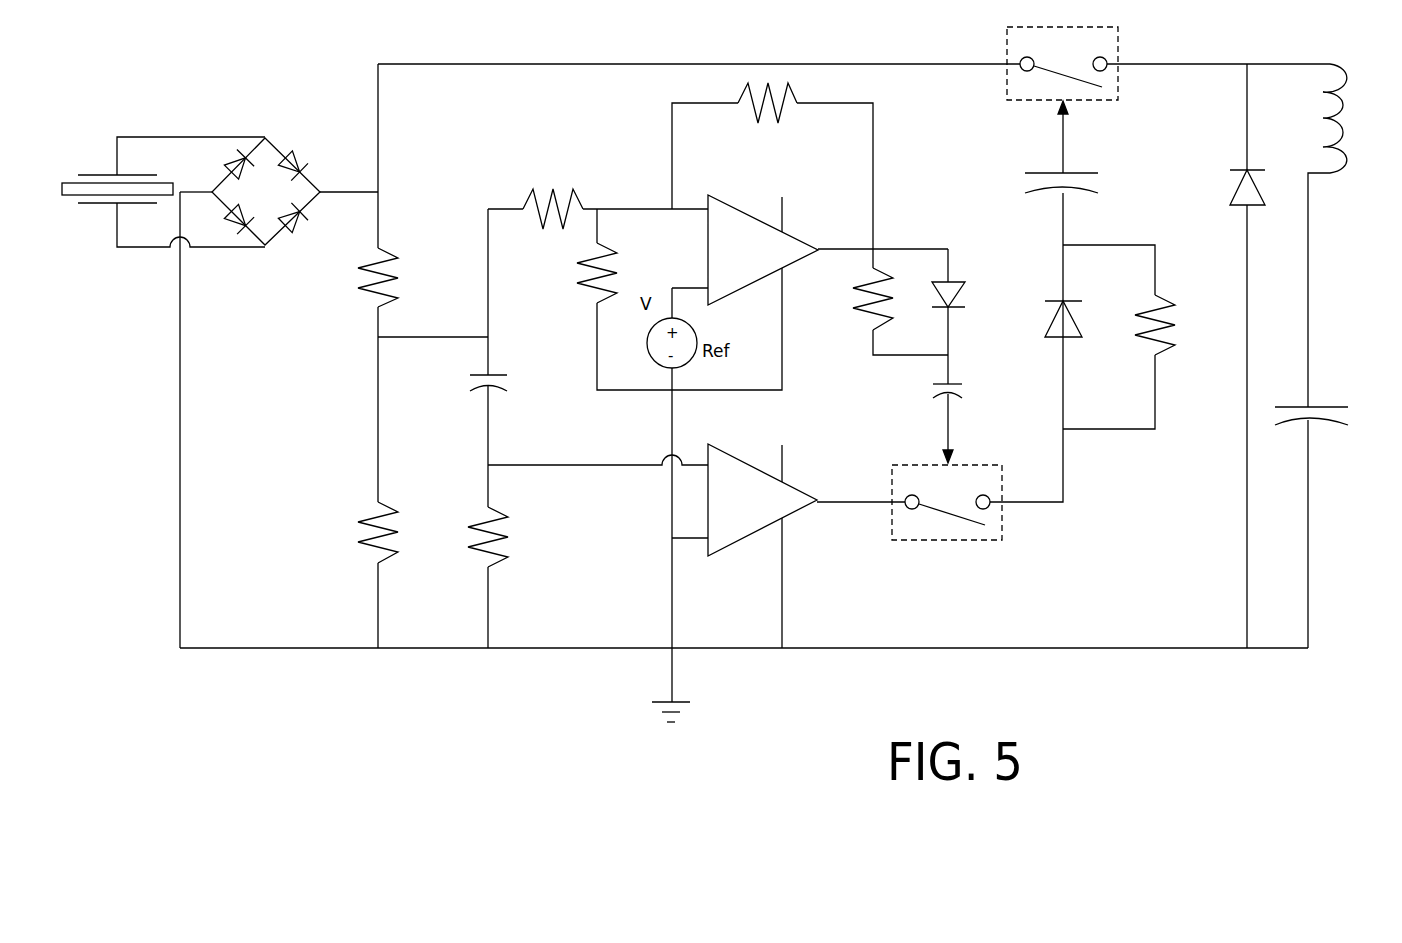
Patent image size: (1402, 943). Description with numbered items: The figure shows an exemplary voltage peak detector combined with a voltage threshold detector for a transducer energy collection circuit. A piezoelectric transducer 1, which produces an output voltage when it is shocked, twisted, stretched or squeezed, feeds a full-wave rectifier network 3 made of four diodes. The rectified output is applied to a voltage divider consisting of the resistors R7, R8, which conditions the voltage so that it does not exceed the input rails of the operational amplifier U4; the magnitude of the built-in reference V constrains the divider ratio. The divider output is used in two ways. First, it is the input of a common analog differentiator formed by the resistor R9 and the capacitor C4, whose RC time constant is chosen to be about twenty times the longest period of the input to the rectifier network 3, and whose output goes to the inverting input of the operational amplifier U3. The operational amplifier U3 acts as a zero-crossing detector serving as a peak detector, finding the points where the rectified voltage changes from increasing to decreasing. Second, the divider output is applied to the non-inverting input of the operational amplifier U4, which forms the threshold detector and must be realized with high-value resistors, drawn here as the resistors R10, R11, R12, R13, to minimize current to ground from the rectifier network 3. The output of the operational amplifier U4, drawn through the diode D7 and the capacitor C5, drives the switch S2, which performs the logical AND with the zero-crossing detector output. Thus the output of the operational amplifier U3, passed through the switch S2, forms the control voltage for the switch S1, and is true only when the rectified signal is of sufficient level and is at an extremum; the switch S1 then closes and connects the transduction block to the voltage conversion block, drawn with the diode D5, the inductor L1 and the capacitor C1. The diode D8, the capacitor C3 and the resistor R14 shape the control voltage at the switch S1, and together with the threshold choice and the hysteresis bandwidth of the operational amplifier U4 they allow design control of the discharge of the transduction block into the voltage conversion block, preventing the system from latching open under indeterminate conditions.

The piezoelectric transducer 1 is at (67, 195).
The full-wave rectifier network 3 is at (280, 238).
The resistor R7 is at (362, 277).
The resistor R8 is at (360, 532).
The resistor R9 is at (509, 577).
The resistor R10 is at (598, 197).
The resistor R11 is at (655, 299).
The resistor R12 is at (772, 175).
The resistor R13 is at (885, 309).
The resistor R14 is at (1177, 325).
The capacitor C1 is at (1310, 516).
The capacitor C3 is at (1059, 147).
The capacitor C4 is at (469, 358).
The capacitor C5 is at (927, 423).
The diode D5 is at (1224, 356).
The diode D7 is at (933, 316).
The diode D8 is at (1081, 337).
The inductor L1 is at (1318, 235).
The switch S1 is at (1062, 63).
The switch S2 is at (977, 366).
The operational amplifier U3 is at (696, 537).
The operational amplifier U4 is at (828, 242).